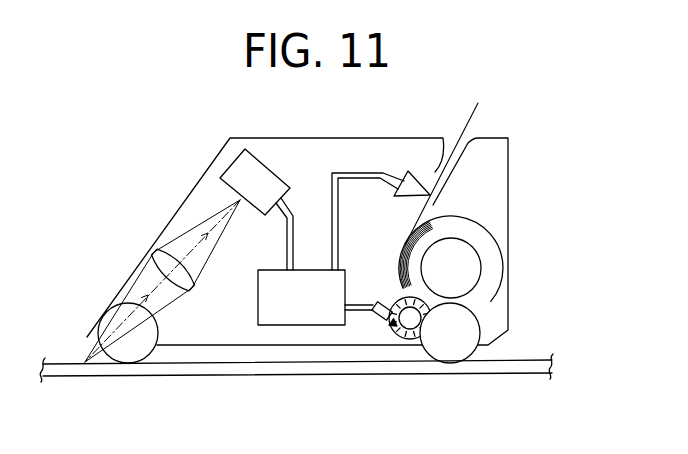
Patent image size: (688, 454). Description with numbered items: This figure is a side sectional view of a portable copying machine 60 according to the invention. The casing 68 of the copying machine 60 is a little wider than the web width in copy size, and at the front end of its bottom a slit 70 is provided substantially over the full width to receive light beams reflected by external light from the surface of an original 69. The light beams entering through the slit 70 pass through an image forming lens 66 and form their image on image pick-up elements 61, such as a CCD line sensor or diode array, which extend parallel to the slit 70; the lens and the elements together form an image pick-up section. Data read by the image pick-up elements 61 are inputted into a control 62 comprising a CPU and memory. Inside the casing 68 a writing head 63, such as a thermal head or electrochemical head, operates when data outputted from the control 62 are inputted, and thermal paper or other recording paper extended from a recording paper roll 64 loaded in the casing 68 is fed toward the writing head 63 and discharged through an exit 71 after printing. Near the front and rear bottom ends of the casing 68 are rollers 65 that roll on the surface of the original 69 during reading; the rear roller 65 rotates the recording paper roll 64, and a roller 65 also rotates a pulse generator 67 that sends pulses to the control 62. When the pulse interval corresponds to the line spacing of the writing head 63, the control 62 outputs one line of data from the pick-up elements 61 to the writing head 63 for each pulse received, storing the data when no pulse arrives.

The copying machine 60 is at (305, 128).
The image pick-up elements 61 is at (263, 162).
The control 62 is at (258, 297).
The writing head 63 is at (406, 173).
The recording paper roll 64 is at (496, 277).
The rollers 65 is at (150, 333).
The image forming lens 66 is at (197, 273).
The pulse generator 67 is at (383, 303).
The casing 68 is at (509, 160).
The original 69 is at (63, 377).
The slit 70 is at (85, 352).
The exit 71 is at (451, 143).